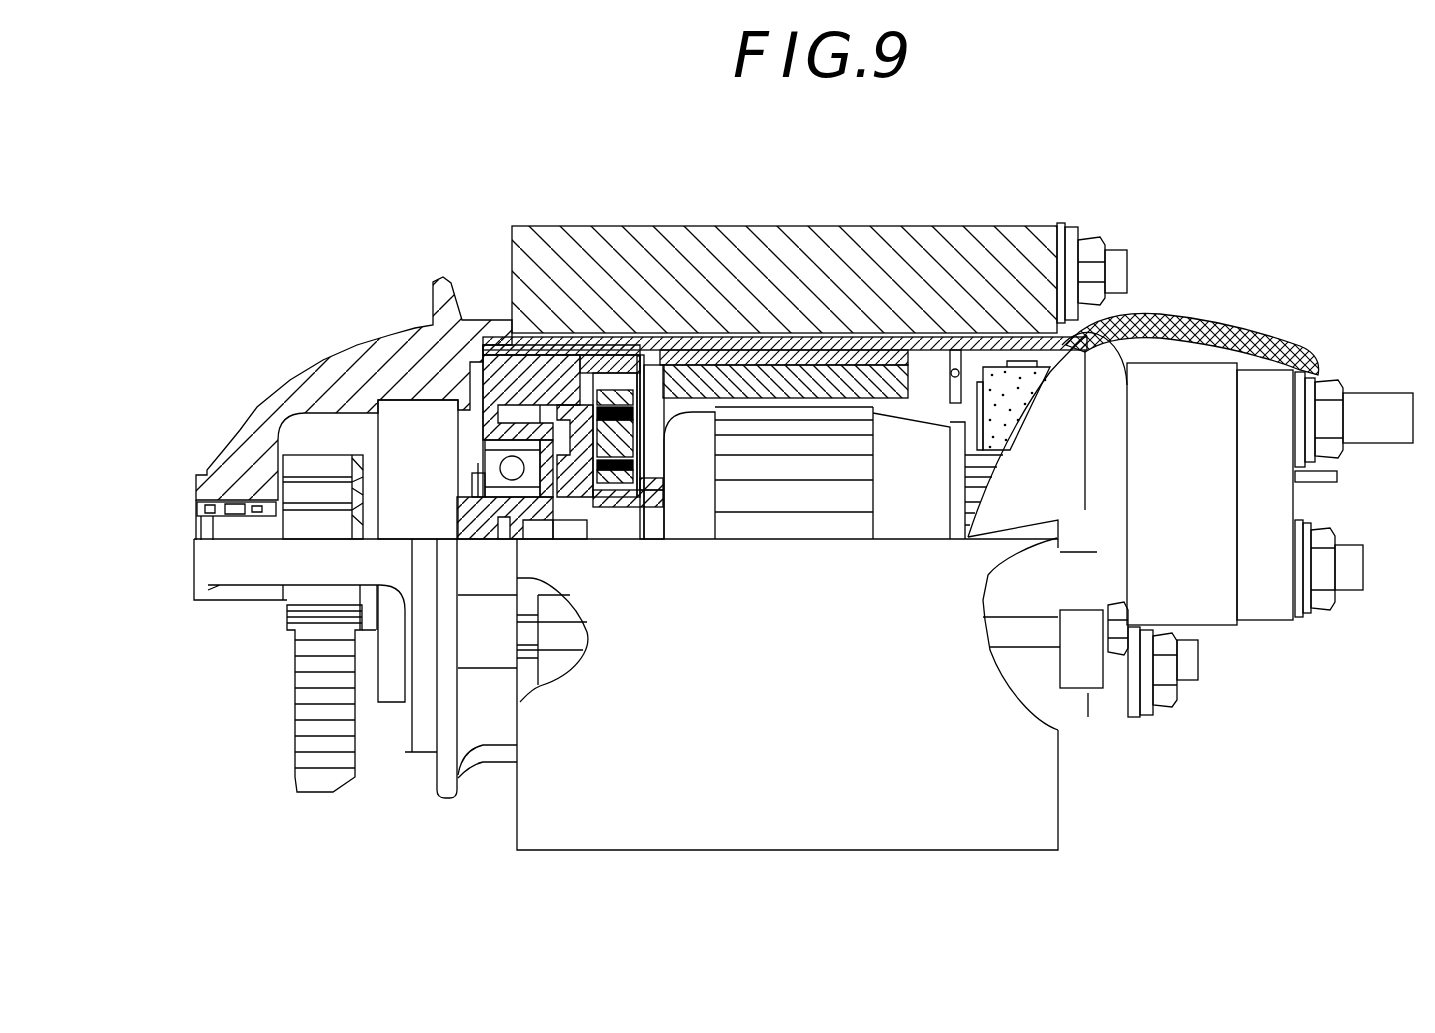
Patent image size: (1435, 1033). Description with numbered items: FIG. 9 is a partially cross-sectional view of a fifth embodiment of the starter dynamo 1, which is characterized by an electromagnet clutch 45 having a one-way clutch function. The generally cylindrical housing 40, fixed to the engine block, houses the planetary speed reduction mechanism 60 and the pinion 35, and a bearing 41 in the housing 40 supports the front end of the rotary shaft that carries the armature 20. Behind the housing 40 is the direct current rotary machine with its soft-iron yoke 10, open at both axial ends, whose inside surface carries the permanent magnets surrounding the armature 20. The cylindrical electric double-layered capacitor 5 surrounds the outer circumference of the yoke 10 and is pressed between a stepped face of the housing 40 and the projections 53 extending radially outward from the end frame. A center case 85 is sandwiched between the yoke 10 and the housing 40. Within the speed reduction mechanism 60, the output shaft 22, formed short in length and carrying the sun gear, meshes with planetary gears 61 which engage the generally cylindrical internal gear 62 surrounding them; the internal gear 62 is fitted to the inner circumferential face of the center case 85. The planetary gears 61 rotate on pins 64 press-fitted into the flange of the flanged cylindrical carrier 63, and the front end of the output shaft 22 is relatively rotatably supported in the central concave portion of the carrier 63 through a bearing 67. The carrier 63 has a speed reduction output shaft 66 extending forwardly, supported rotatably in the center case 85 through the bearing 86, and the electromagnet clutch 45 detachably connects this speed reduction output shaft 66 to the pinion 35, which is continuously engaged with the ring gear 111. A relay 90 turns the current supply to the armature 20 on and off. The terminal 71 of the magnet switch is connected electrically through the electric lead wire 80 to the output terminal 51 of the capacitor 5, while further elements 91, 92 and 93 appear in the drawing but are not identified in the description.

The starter dynamo 1 is at (876, 204).
The electric double-layered capacitor 5 is at (760, 258).
The yoke 10 is at (797, 335).
The armature 20 is at (915, 497).
The output shaft 22 is at (645, 500).
The pinion 35 is at (328, 467).
The housing 40 is at (338, 370).
The bearing 41 is at (240, 505).
The electromagnet clutch 45 is at (418, 443).
The output terminal 51 is at (1118, 260).
The projections 53 is at (1028, 632).
The planetary speed reduction mechanism 60 is at (562, 400).
The planetary gears 61 is at (630, 390).
The internal gear 62 is at (585, 380).
The carrier 63 is at (550, 312).
The pins 64 is at (617, 540).
The speed reduction output shaft 66 is at (474, 540).
The bearing 67 is at (560, 540).
The terminal 71 is at (1388, 405).
The electric lead wire 80 is at (1200, 320).
The center case 85 is at (493, 340).
The bearing 86 is at (468, 400).
The relay 90 is at (1222, 568).
The lead wire 91 is at (1340, 478).
The motor terminal 92 is at (1358, 556).
The switch terminal 93 is at (1133, 675).
The ring gear 111 is at (335, 780).